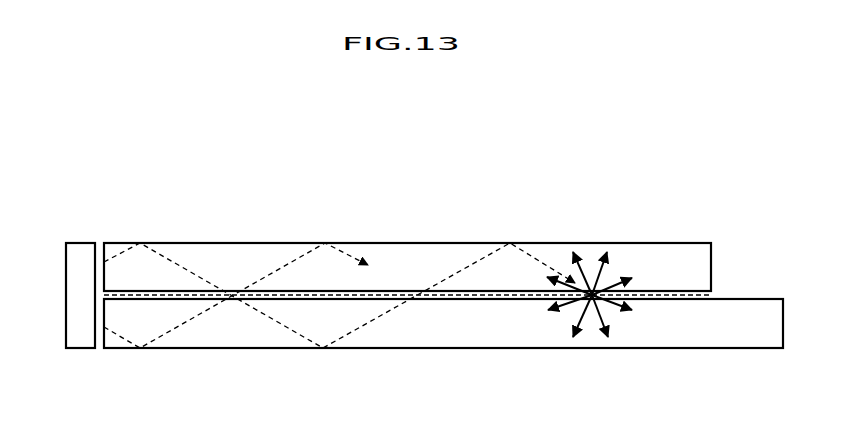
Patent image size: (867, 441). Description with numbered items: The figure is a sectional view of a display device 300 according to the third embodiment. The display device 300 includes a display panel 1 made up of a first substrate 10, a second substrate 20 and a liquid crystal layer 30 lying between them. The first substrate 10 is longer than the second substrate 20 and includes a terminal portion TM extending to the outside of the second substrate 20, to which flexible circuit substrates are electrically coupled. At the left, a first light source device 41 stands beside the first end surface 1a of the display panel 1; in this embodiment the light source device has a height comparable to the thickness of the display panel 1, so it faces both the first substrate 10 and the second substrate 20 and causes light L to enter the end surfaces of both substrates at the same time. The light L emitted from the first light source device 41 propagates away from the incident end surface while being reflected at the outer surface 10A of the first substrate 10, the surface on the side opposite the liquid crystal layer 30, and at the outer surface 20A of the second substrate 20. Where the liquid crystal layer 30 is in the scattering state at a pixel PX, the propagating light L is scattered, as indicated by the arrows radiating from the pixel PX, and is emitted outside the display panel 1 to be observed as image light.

The display device 300 is at (608, 167).
The display panel 1 is at (195, 356).
The first end surface 1a is at (99, 247).
The first substrate 10 is at (433, 333).
The outer surface of the first substrate 10A is at (308, 350).
The second substrate 20 is at (433, 258).
The outer surface of the second substrate 20A is at (310, 243).
The liquid crystal layer 30 is at (104, 294).
The first light source device 41 is at (82, 251).
The light L is at (195, 268).
The pixel PX is at (606, 308).
The terminal portion TM is at (752, 308).